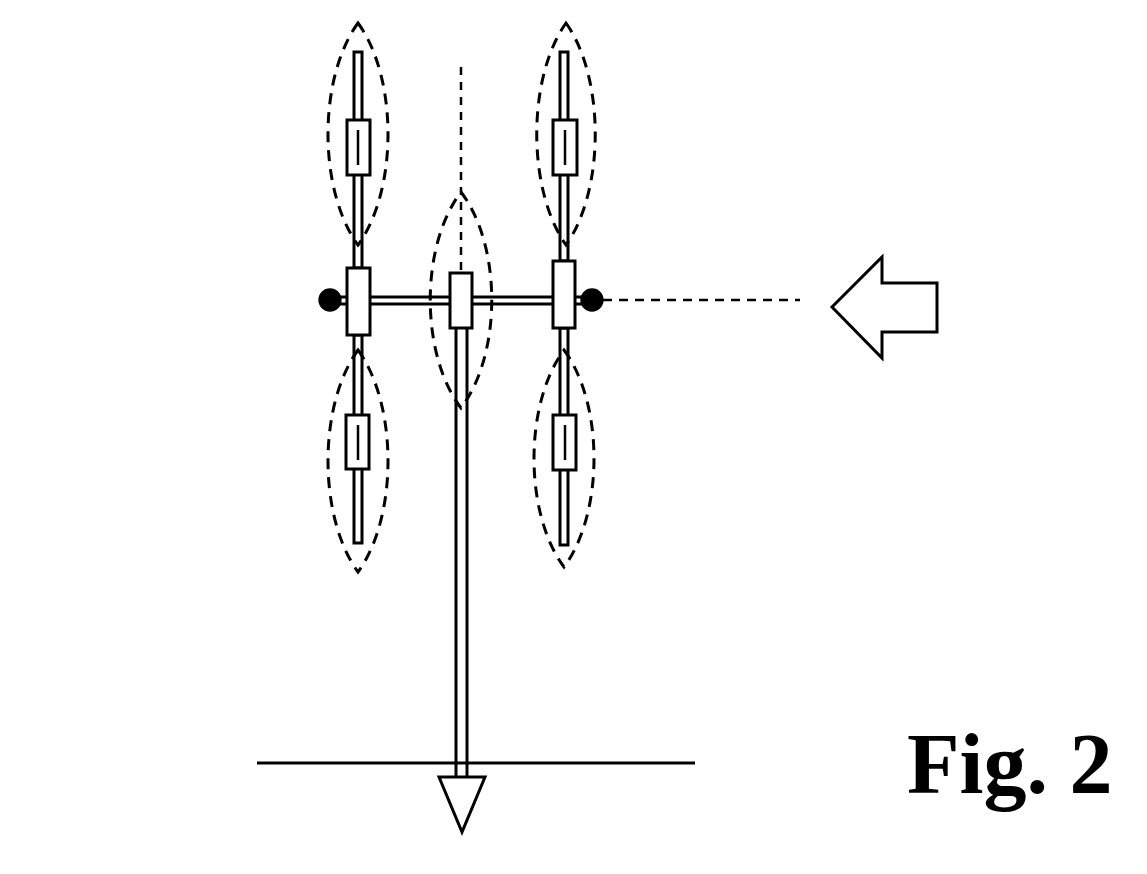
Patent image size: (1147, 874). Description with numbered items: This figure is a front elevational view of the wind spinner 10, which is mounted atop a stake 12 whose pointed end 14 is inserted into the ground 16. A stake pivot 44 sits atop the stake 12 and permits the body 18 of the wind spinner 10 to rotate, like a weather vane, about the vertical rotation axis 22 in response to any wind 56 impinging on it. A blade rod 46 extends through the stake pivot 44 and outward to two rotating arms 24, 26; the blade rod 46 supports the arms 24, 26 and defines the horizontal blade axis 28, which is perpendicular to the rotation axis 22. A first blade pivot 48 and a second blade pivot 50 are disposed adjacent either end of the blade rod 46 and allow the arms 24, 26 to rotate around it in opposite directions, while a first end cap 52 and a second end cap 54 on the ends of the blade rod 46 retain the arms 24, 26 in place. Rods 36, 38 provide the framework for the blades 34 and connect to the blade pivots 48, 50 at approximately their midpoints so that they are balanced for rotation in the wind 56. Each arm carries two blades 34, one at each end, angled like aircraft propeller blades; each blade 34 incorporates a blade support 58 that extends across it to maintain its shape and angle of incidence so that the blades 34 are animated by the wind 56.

The wind spinner 10 is at (157, 182).
The stake 12 is at (468, 742).
The pointed end 14 is at (480, 792).
The ground 16 is at (320, 762).
The body 18 is at (477, 216).
The rotation axis 22 is at (462, 100).
The rotating arm 24 is at (583, 528).
The rotating arm 26 is at (345, 557).
The blade axis 28 is at (760, 298).
The blade 34 is at (335, 70).
The rod 36 is at (570, 85).
The rod 38 is at (353, 255).
The stake pivot 44 is at (458, 330).
The blade rod 46 is at (395, 297).
The first blade pivot 48 is at (576, 276).
The second blade pivot 50 is at (343, 328).
The first end cap 52 is at (600, 289).
The second end cap 54 is at (325, 293).
The wind 56 is at (918, 333).
The blade support 58 is at (346, 152).